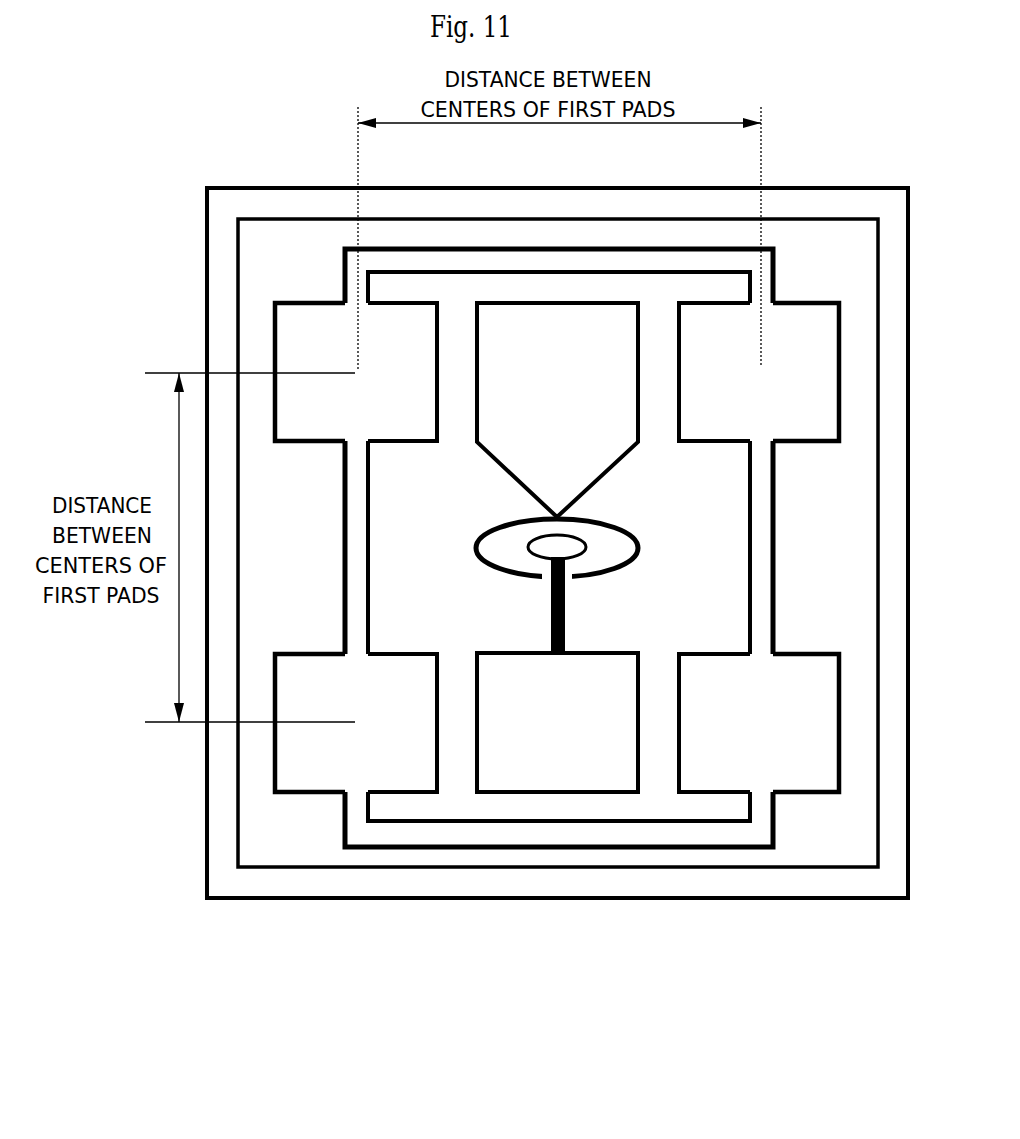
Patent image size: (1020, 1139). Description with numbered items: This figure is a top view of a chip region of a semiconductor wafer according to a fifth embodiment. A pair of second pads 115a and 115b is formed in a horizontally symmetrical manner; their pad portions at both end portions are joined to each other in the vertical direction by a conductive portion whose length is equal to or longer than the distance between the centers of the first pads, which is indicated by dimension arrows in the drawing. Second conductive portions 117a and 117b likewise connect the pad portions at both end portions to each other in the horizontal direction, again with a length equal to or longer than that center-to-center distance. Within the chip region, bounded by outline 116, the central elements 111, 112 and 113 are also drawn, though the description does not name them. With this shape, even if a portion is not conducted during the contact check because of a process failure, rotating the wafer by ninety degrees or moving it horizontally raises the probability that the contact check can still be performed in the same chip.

The annular element (via ring) 111 is at (642, 543).
The lower second pad 112 is at (492, 653).
The upper second pad 113 is at (495, 460).
The second pad 115a is at (300, 305).
The second pad 115b is at (817, 307).
The substrate outline 116 is at (877, 190).
The second conductive portion 117a is at (548, 258).
The second conductive portion 117b is at (552, 837).